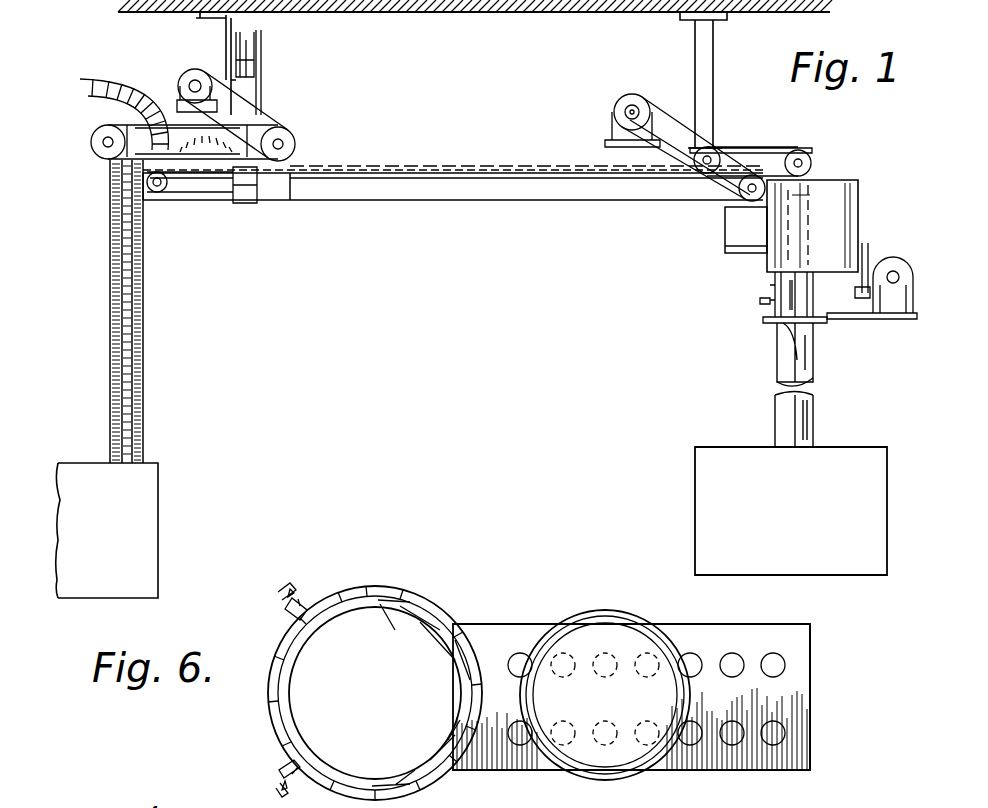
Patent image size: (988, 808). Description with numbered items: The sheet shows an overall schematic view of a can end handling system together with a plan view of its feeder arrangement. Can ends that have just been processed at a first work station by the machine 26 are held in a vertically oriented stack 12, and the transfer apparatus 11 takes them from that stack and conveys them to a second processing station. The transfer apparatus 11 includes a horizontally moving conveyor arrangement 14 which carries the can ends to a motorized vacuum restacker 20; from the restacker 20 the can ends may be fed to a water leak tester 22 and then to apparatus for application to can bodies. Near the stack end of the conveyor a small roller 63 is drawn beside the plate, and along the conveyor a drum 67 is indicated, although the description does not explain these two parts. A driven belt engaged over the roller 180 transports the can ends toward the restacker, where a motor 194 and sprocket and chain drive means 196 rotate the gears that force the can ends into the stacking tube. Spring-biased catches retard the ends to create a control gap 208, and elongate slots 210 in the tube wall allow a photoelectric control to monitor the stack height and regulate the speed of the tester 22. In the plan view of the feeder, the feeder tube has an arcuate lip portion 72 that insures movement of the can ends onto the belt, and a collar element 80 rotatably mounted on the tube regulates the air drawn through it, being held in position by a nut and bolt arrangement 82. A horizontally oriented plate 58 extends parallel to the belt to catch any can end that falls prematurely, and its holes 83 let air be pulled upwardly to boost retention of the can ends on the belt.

In FIG. 1, the transfer apparatus 11 is at (140, 76).
In FIG. 1, the vertically oriented stack 12 is at (158, 300).
In FIG. 1, the conveyor arrangement 14 is at (330, 200).
In FIG. 1, the motorized vacuum restacker 20 is at (717, 265).
In FIG. 1, the water leak tester 22 is at (710, 462).
In FIG. 1, the machine 26 is at (132, 482).
In FIG. 1, the horizontally oriented plate 58 is at (200, 168).
In FIG. 6, the horizontally oriented plate 58 is at (842, 699).
In FIG. 1, the roller 63 is at (157, 193).
In FIG. 1, the drum 67 is at (510, 172).
In FIG. 6, the drum 67 is at (625, 626).
In FIG. 6, the arcuate lip portion 72 is at (427, 607).
In FIG. 6, the collar element 80 is at (470, 640).
In FIG. 6, the nut and bolt arrangement 82 is at (302, 602).
In FIG. 6, the holes 83 is at (517, 725).
In FIG. 1, the roller 180 is at (838, 145).
In FIG. 1, the motor 194 is at (893, 270).
In FIG. 1, the sprocket and chain drive means 196 is at (875, 225).
In FIG. 1, the control gap 208 is at (822, 308).
In FIG. 1, the elongate slots 210 is at (783, 333).